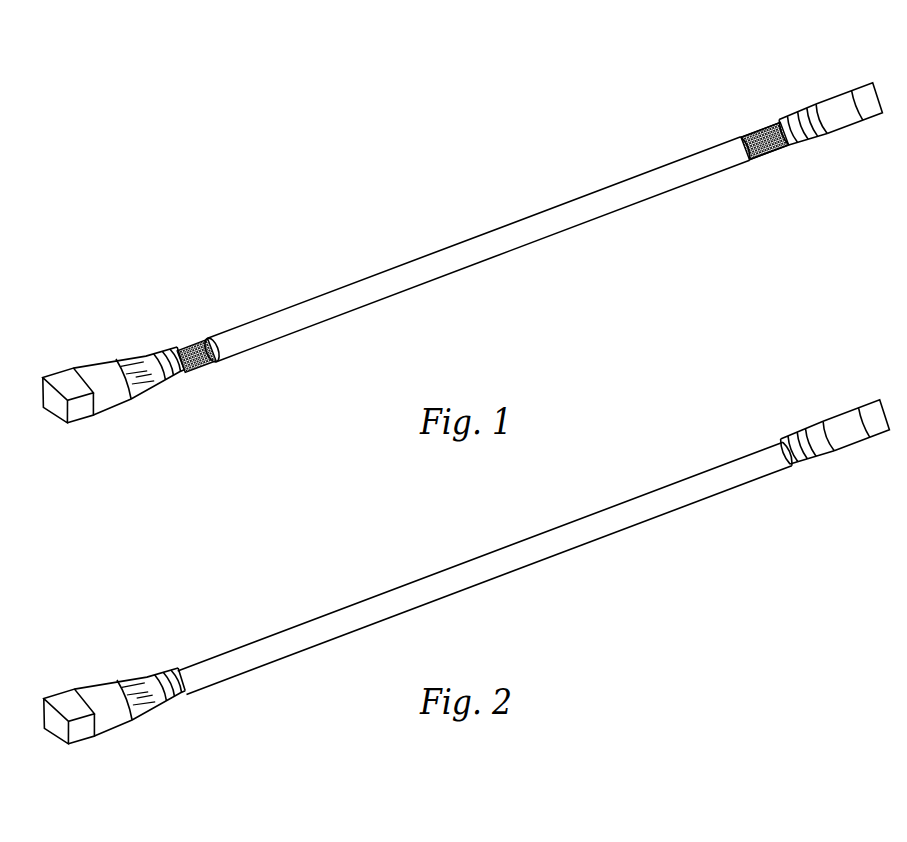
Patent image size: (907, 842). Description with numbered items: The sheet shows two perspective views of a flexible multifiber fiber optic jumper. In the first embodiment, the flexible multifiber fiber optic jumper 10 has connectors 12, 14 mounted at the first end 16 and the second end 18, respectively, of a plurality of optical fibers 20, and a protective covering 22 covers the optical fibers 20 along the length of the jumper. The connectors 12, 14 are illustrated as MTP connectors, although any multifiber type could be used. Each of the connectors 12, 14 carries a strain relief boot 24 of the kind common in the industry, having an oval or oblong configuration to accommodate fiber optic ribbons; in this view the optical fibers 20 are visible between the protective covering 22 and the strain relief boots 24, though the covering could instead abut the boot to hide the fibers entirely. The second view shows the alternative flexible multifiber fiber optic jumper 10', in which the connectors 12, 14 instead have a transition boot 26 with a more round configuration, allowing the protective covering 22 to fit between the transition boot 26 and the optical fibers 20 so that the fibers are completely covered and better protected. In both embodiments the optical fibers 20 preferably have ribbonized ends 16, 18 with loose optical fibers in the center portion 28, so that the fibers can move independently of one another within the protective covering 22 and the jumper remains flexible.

In FIG. 1, the flexible multifiber fiber optic jumper 10 is at (463, 220).
In FIG. 2, the flexible multifiber fiber optic jumper 10' is at (467, 565).
In FIG. 1, the connector 12 is at (90, 355).
In FIG. 2, the connector 12 is at (90, 688).
In FIG. 1, the connector 14 is at (830, 93).
In FIG. 2, the connector 14 is at (833, 412).
In FIG. 1, the first end 16 is at (160, 325).
In FIG. 1, the second end 18 is at (796, 137).
In FIG. 1, the optical fibers 20 is at (772, 150).
In FIG. 1, the protective covering 22 is at (283, 305).
In FIG. 2, the protective covering 22 is at (370, 585).
In FIG. 1, the strain relief boot 24 is at (807, 140).
In FIG. 2, the transition boot 26 is at (150, 712).
In FIG. 1, the center portion 28 is at (312, 338).
In FIG. 2, the center portion 28 is at (535, 590).